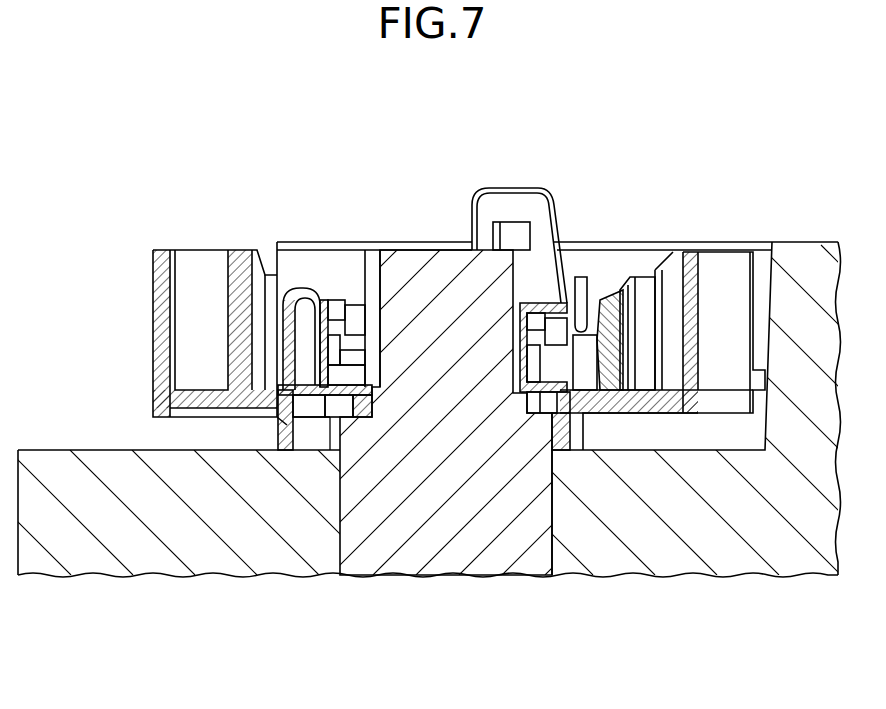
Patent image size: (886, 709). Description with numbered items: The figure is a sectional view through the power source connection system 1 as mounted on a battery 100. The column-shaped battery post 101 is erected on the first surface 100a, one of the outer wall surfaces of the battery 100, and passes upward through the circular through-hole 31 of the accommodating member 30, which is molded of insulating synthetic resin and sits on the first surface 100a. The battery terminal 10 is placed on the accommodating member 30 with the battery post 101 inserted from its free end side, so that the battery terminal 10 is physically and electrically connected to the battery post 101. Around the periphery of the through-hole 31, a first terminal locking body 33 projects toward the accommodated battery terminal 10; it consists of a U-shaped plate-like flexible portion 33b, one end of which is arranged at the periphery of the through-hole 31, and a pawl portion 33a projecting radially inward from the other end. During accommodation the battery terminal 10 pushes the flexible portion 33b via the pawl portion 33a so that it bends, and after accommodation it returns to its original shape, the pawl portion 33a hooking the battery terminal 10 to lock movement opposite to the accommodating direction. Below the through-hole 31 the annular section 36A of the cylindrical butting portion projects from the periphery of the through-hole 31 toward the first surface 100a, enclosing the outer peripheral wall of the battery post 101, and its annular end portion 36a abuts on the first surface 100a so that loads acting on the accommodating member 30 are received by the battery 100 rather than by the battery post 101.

The power source connection system 1 is at (574, 157).
The battery terminal 10 is at (583, 310).
The accommodating member 30 is at (152, 277).
The through-hole 31 is at (310, 430).
The first terminal locking body 33 is at (311, 269).
The pawl portion 33a is at (340, 337).
The flexible portion 33b is at (317, 283).
The annular section 36A is at (263, 433).
The annular end portion 36a is at (571, 455).
The battery 100 is at (76, 345).
The first surface 100a is at (72, 450).
The battery post 101 is at (450, 242).